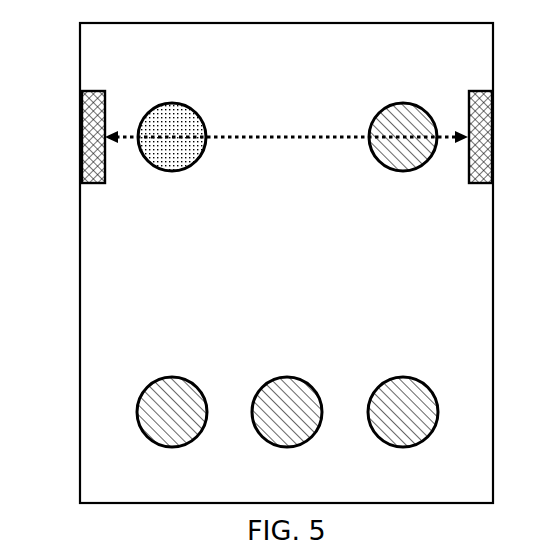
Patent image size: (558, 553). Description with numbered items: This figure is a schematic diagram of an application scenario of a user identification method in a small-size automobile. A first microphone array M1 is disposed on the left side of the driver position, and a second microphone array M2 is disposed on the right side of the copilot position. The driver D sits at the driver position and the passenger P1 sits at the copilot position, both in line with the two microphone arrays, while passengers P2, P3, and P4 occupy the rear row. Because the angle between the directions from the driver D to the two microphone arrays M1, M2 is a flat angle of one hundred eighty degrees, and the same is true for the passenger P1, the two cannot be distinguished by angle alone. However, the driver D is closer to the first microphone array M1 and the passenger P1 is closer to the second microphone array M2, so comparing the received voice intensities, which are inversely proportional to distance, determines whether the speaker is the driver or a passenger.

The first microphone array M1 is at (82, 142).
The second microphone array M2 is at (492, 142).
The driver D is at (178, 155).
The passenger P1 is at (406, 155).
The passenger P2 is at (176, 430).
The passenger P3 is at (291, 430).
The passenger P4 is at (407, 430).